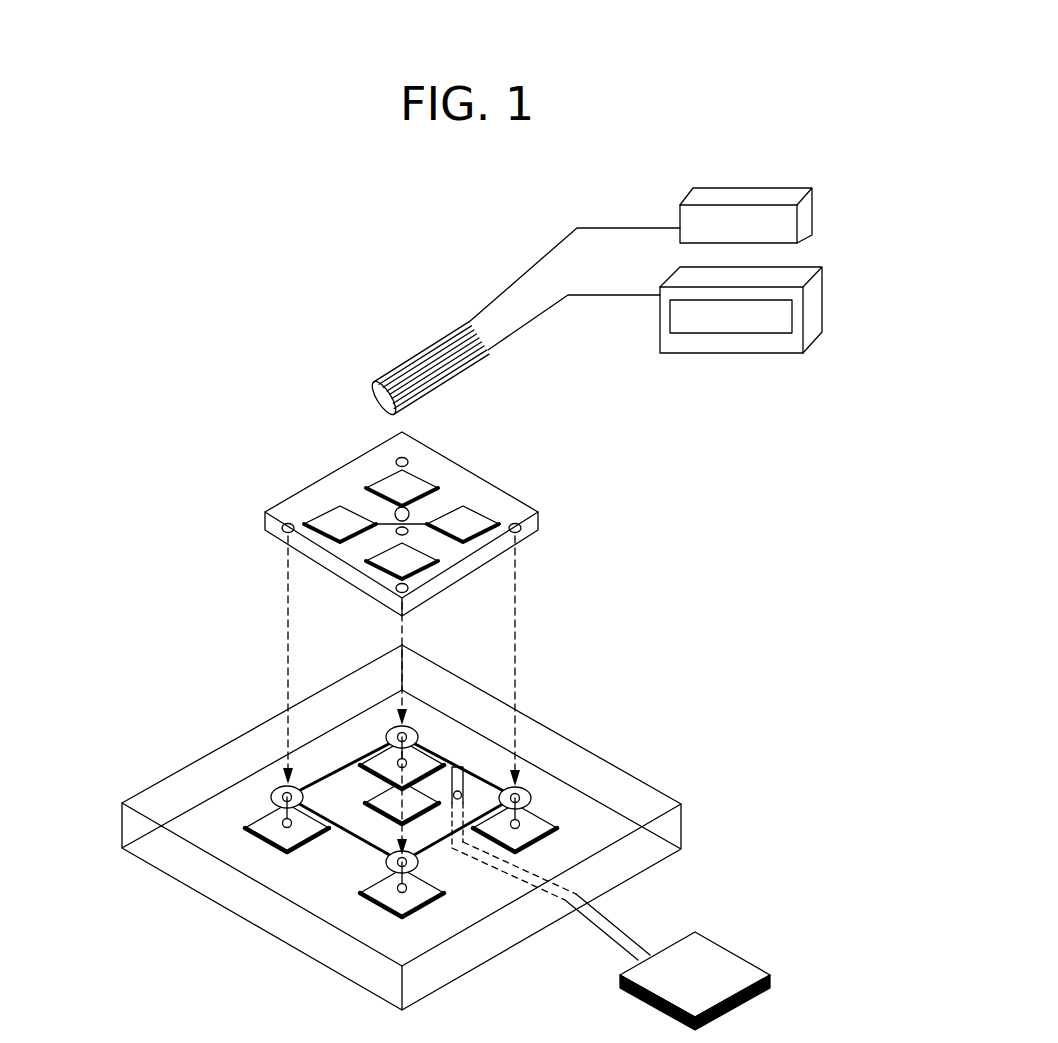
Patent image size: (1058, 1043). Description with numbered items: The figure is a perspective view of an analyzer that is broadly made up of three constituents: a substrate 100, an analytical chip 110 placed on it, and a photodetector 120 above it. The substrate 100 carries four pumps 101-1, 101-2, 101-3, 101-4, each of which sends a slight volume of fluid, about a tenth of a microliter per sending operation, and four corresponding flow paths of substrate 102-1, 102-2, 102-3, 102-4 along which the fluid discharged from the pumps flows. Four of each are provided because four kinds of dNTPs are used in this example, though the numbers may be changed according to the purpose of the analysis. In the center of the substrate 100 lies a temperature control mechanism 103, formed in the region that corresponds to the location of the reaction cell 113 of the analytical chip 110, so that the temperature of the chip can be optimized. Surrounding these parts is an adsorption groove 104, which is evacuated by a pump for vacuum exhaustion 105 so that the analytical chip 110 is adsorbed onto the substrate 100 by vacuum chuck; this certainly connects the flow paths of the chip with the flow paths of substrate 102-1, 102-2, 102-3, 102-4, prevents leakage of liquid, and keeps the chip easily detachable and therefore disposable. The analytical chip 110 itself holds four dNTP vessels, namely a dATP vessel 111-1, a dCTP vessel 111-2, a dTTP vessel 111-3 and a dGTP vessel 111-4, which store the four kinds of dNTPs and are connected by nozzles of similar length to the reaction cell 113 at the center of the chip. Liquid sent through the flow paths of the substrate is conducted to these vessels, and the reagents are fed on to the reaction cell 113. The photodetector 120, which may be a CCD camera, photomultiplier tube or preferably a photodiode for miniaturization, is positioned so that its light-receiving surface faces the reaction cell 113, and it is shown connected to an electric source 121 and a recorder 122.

The substrate 100 is at (128, 830).
The pump 101-1 is at (377, 905).
The pump 101-2 is at (537, 823).
The pump 101-3 is at (422, 757).
The pump 101-4 is at (275, 833).
The flow path of substrate 102-1 is at (408, 878).
The flow path of substrate 102-2 is at (535, 812).
The flow path of substrate 102-3 is at (408, 745).
The flow path of substrate 102-4 is at (280, 815).
The temperature control mechanism 103 is at (388, 805).
The adsorption groove 104 is at (347, 767).
The pump for vacuum exhaustion 105 is at (731, 965).
The analytical chip 110 is at (267, 517).
The dATP vessel 111-1 is at (407, 560).
The dCTP vessel 111-2 is at (480, 523).
The dTTP vessel 111-3 is at (403, 488).
The dGTP vessel 111-4 is at (332, 518).
The reaction cell 113 is at (397, 512).
The photodetector 120 is at (396, 365).
The electric source 121 is at (812, 213).
The recorder 122 is at (812, 305).